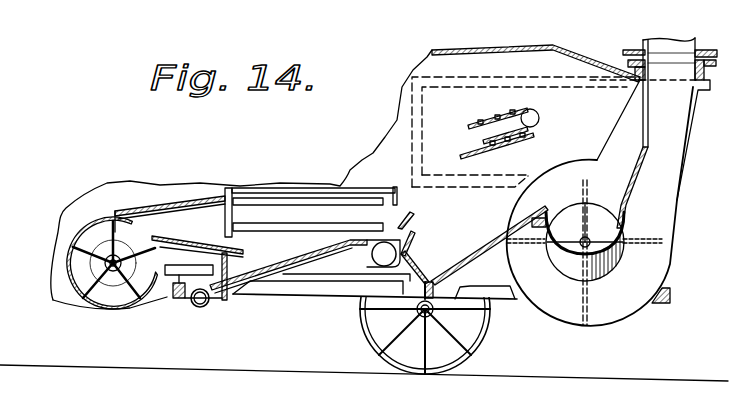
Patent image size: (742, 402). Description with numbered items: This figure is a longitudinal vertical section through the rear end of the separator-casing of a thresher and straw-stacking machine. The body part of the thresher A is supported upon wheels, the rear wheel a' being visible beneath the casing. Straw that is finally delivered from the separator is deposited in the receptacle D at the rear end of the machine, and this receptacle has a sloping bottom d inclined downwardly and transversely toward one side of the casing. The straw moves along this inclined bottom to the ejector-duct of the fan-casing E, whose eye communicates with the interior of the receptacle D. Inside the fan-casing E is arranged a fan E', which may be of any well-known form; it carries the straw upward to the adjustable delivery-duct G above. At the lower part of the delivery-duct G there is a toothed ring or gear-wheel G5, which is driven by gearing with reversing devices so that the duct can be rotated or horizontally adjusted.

The body part of the thresher A is at (526, 97).
The fan-casing E is at (508, 175).
The fan E' is at (602, 252).
The delivery-duct G is at (653, 109).
The toothed ring G5 is at (623, 55).
The receptacle D is at (633, 187).
The sloping bottom d is at (562, 270).
The rear wheel a' is at (425, 309).